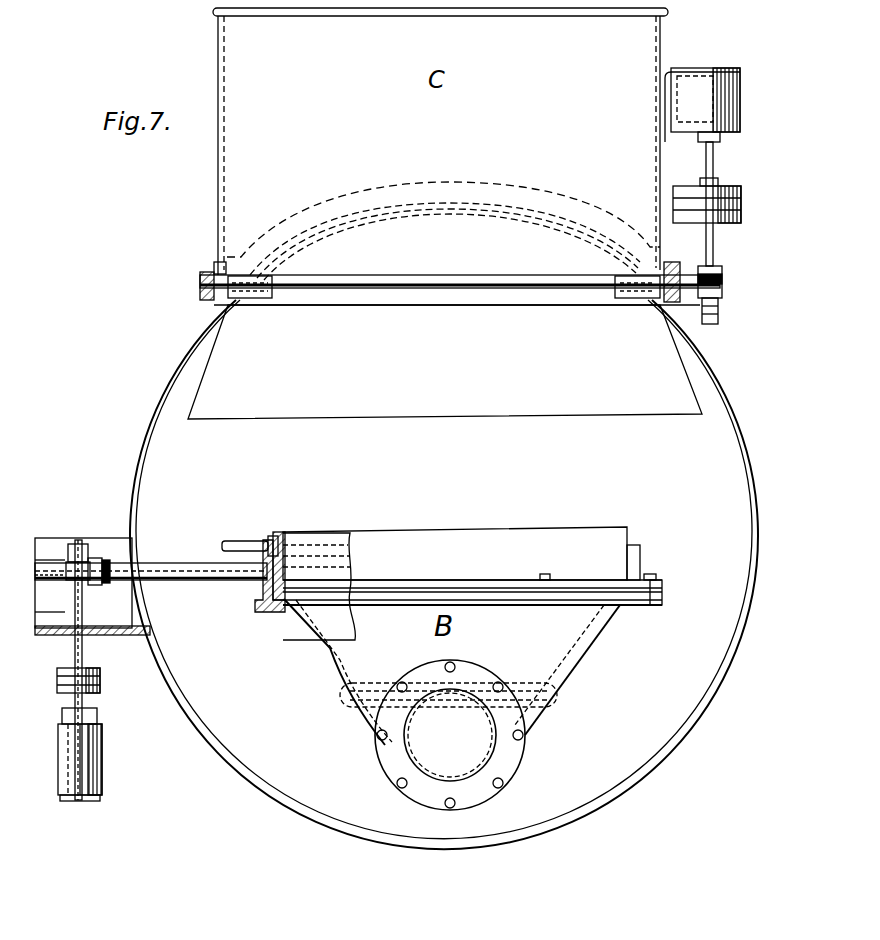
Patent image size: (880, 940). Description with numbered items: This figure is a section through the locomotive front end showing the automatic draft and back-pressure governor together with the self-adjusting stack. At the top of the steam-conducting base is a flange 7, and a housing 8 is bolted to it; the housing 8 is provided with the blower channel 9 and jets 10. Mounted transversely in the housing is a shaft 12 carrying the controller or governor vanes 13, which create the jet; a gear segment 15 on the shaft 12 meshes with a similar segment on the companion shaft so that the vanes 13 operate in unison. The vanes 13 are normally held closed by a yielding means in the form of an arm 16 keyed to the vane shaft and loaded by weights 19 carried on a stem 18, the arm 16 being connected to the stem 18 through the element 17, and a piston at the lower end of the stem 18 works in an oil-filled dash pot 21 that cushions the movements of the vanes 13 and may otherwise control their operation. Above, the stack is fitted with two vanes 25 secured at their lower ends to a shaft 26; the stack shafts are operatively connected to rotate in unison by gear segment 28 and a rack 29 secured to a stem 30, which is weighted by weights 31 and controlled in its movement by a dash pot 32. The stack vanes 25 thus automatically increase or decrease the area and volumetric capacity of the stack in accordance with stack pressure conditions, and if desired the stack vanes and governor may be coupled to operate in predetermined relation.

The stack vane 25 is at (220, 182).
The shaft 26 is at (395, 289).
The dash pot 32 is at (740, 98).
The stem 30 is at (713, 166).
The weights 31 is at (741, 206).
The gear segment 28 is at (722, 292).
The rack 29 is at (718, 321).
The vertical shaft 17 is at (72, 545).
The arm 16 is at (78, 542).
The stem 18 is at (75, 608).
The gear segment 15 is at (96, 585).
The shaft 12 is at (172, 580).
The weights 19 is at (100, 680).
The dash pot 21 is at (102, 750).
The jets 10 is at (272, 538).
The housing 8 is at (280, 546).
The governor vanes 13 is at (310, 535).
The blower channel 9 is at (335, 532).
The flange 7 is at (272, 612).